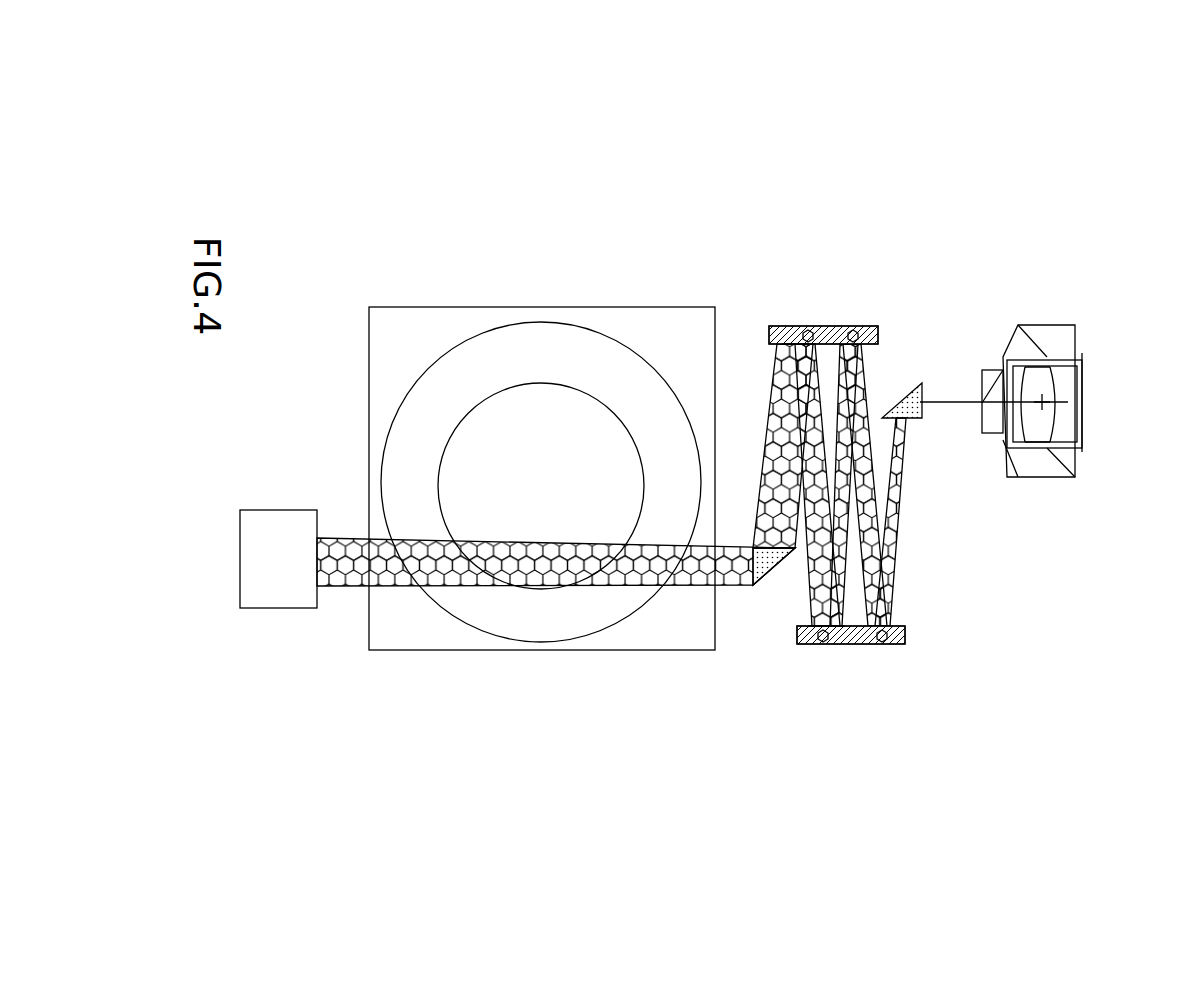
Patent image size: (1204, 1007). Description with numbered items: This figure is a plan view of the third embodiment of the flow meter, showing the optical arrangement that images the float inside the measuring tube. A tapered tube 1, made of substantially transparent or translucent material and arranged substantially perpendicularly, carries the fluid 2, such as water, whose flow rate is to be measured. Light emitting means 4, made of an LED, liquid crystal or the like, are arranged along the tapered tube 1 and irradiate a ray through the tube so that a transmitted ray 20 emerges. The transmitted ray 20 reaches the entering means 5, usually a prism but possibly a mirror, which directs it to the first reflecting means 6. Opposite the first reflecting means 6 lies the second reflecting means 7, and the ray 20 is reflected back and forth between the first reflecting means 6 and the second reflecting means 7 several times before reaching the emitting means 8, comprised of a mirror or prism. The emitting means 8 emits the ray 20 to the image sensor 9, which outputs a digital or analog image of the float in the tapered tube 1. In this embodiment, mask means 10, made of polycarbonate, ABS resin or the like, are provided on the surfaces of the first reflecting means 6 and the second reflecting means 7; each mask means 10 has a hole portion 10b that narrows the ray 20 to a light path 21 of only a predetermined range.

The tapered tube 1 is at (460, 617).
The fluid 2 is at (478, 477).
The light emitting means 4 is at (260, 580).
The entering means 5 is at (773, 570).
The first reflecting means 6 is at (798, 336).
The second reflecting means 7 is at (825, 642).
The emitting means 8 is at (900, 400).
The image sensor 9 is at (1082, 437).
The mask means 10 is at (770, 337).
The hole portion 10b is at (808, 338).
The transmitted ray 20 is at (738, 587).
The light path 21 is at (892, 552).